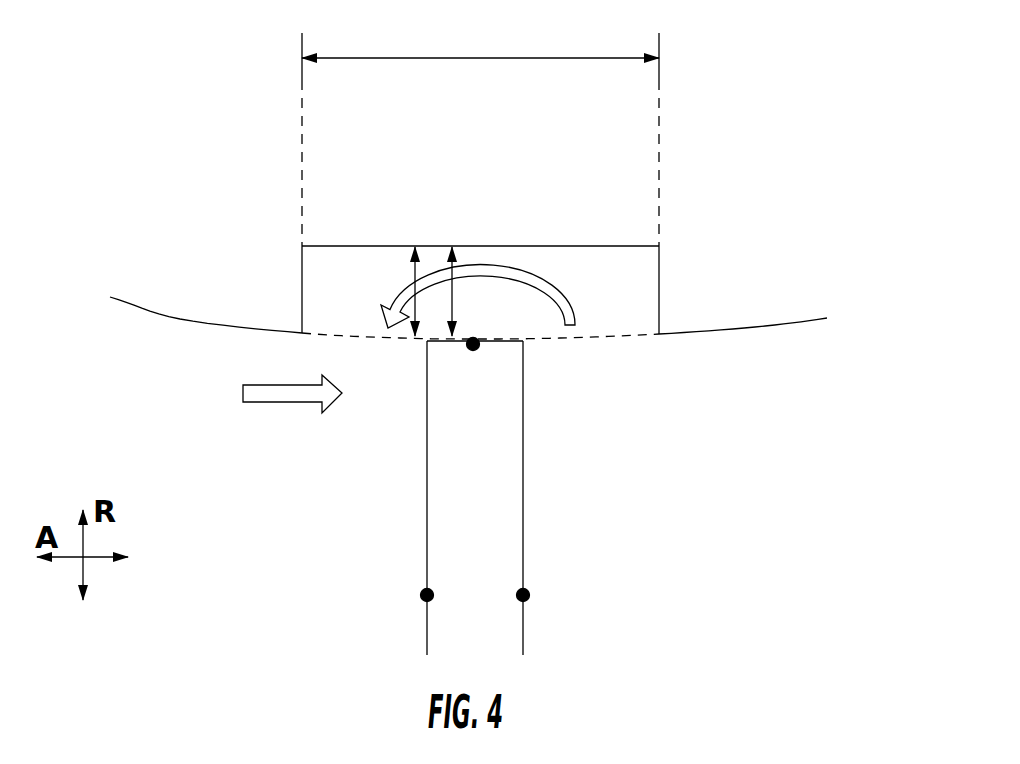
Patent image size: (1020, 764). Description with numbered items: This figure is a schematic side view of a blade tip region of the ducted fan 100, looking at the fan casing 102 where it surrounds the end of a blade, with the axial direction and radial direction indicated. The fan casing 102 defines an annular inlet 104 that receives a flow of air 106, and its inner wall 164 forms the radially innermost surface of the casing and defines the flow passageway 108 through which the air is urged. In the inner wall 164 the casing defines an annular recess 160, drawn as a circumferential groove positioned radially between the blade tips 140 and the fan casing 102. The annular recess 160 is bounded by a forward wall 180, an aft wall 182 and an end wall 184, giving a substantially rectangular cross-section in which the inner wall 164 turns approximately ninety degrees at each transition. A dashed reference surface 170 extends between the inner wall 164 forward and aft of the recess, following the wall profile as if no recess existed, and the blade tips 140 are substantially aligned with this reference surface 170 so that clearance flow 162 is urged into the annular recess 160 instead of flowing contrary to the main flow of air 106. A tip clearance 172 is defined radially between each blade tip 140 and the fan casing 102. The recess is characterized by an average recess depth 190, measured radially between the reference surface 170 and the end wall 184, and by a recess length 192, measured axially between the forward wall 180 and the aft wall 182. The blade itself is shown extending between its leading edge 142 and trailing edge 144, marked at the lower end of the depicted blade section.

The ducted fan 100 is at (852, 138).
The fan casing 102 is at (734, 262).
The annular inlet 104 is at (165, 465).
The flow of air 106 is at (276, 398).
The flow passageway 108 is at (268, 593).
The blade tip 140 is at (511, 336).
The leading edge 142 is at (421, 595).
The trailing edge 144 is at (529, 595).
The annular recess 160 is at (359, 268).
The clearance flow 162 is at (560, 302).
The inner wall 164 is at (757, 332).
The reference surface 170 is at (583, 340).
The tip clearance 172 is at (449, 280).
The forward wall 180 is at (302, 266).
The aft wall 182 is at (660, 298).
The end wall 184 is at (491, 246).
The average recess depth 190 is at (412, 272).
The recess length 192 is at (454, 57).